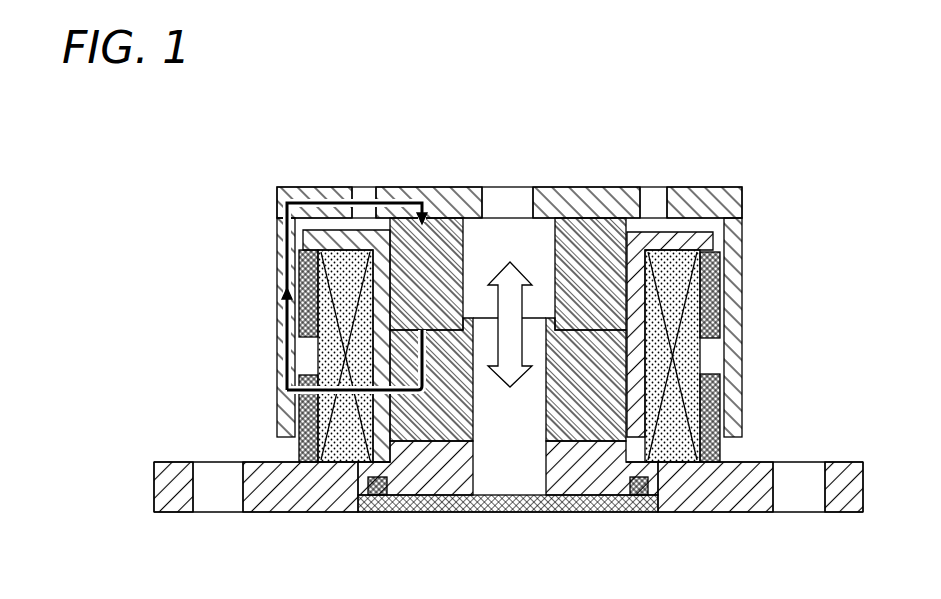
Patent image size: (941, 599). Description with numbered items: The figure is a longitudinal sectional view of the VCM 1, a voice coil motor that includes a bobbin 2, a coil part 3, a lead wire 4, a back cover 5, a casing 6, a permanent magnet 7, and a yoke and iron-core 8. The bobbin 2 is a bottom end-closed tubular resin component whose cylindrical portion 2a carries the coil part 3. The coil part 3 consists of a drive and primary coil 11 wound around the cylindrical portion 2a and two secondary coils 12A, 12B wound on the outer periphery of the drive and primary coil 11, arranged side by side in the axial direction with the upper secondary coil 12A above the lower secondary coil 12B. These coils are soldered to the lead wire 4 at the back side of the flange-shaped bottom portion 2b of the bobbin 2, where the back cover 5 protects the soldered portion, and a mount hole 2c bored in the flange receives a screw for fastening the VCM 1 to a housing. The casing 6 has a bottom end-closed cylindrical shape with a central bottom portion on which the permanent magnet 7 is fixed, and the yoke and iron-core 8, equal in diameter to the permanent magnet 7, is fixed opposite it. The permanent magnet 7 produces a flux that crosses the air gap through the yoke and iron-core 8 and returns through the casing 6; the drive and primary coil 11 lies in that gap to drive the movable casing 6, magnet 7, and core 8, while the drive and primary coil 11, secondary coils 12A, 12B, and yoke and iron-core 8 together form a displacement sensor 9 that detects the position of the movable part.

The VCM 1 is at (540, 286).
The bobbin 2 is at (537, 488).
The cylindrical portion 2a is at (377, 354).
The bottom portion 2b is at (863, 482).
The mount hole 2c is at (195, 488).
The coil part 3 is at (575, 356).
The lead wire 4 is at (377, 496).
The back cover 5 is at (627, 513).
The casing 6 is at (430, 187).
The permanent magnet 7 is at (590, 232).
The yoke and iron-core 8 is at (600, 388).
The displacement sensor 9 is at (600, 298).
The drive and primary coil 11 is at (680, 353).
The upper secondary coil 12A is at (720, 312).
The lower secondary coil 12B is at (558, 418).